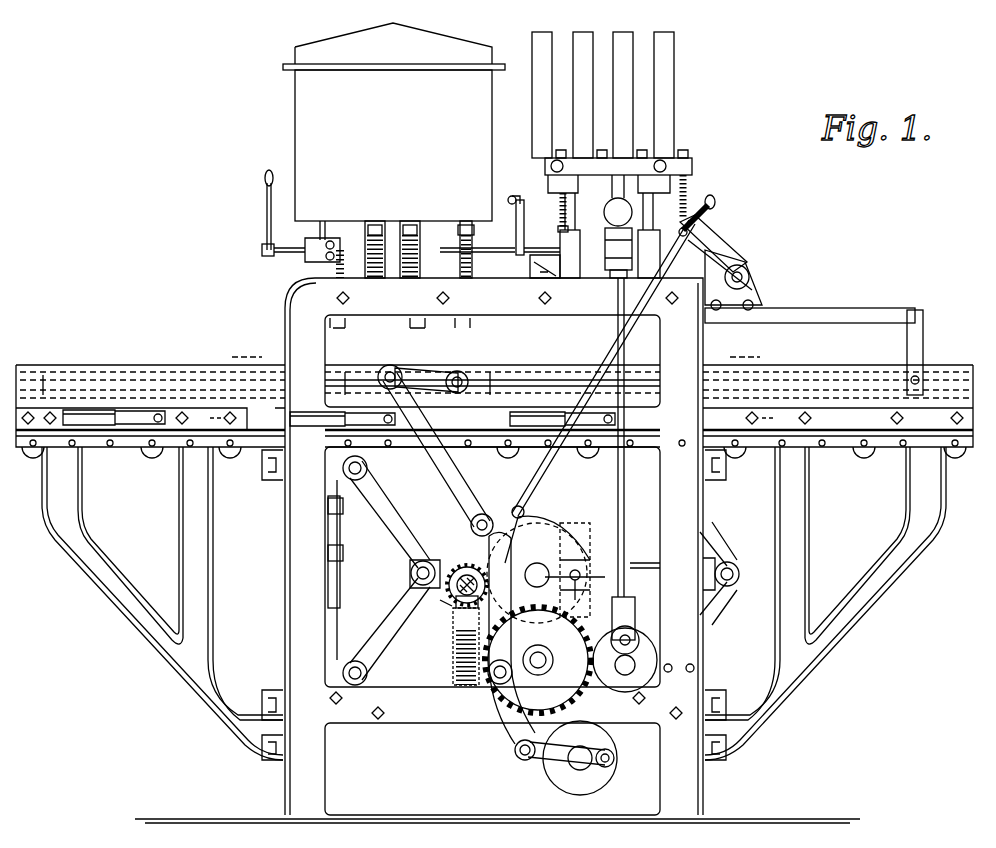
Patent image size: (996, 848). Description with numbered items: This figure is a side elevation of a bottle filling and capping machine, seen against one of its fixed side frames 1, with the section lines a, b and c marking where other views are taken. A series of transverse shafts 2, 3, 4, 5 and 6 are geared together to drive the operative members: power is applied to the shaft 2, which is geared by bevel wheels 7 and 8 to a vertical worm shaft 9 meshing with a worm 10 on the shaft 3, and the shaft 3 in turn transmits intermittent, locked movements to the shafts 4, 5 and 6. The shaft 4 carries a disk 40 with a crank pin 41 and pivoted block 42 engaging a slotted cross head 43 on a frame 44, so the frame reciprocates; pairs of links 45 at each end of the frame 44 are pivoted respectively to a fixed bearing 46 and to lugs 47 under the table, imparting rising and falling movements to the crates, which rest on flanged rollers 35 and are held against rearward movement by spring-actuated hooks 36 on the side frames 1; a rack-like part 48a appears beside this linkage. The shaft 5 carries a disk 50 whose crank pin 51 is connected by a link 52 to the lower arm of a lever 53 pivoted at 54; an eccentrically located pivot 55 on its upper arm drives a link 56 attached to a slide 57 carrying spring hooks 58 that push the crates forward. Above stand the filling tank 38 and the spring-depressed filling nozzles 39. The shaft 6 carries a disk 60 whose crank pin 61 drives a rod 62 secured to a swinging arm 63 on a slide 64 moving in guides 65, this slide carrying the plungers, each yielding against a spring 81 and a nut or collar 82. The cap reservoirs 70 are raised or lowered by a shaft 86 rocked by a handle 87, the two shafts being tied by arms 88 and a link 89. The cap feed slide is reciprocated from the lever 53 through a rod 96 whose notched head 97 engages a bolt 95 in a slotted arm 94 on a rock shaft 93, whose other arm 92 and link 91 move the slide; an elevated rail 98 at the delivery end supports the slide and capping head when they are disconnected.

The fixed side frame 1 is at (494, 550).
The power shaft 2 is at (462, 574).
The shaft 3 is at (546, 661).
The shaft 4 is at (534, 568).
The shaft 5 is at (577, 766).
The shaft 6 is at (623, 672).
The bevel wheel 7 is at (470, 566).
The bevel wheel 8 is at (442, 606).
The vertical worm shaft 9 is at (455, 665).
The worm 10 is at (538, 660).
The rollers 35 is at (955, 452).
The spring-actuated hooks 36 is at (96, 426).
The filling tank 38 is at (394, 131).
The filling nozzles 39 is at (402, 279).
The disk 40 is at (543, 528).
The crank pin 41 is at (581, 581).
The pivoted block 42 is at (582, 570).
The slotted cross head 43 is at (588, 525).
The frame 44 is at (648, 563).
The links 45 is at (392, 525).
The fixed bearing 46 is at (366, 678).
The lugs 47 is at (366, 460).
The rack 48a is at (340, 577).
The disk 50 is at (596, 783).
The crank pin 51 is at (614, 759).
The link 52 is at (545, 755).
The lever 53 is at (460, 479).
The pivot 54 is at (505, 684).
The eccentrically located pivot 55 is at (390, 365).
The link 56 is at (425, 370).
The slide 57 is at (43, 374).
The spring hooks 58 is at (116, 385).
The disk 60 is at (652, 654).
The crank pin 61 is at (632, 646).
The rod 62 is at (616, 297).
The swinging arm 63 is at (605, 236).
The slide 64 is at (618, 175).
The guides 65 is at (595, 235).
The cap reservoirs 70 is at (533, 115).
The spring 81 is at (560, 207).
The nut or collar 82 is at (558, 228).
The shaft 86 is at (490, 252).
The handle 87 is at (267, 216).
The arms 88 is at (516, 226).
The link 89 is at (512, 189).
The link 91 is at (737, 312).
The arm 92 is at (758, 290).
The rock shaft 93 is at (750, 272).
The slotted arm 94 is at (715, 237).
The bolt 95 is at (690, 230).
The rod 96 is at (620, 362).
The notched head 97 is at (728, 262).
The elevated rail 98 is at (850, 312).
The section line a— a is at (607, 254).
The section line b— b is at (491, 419).
The section line c— c is at (495, 357).